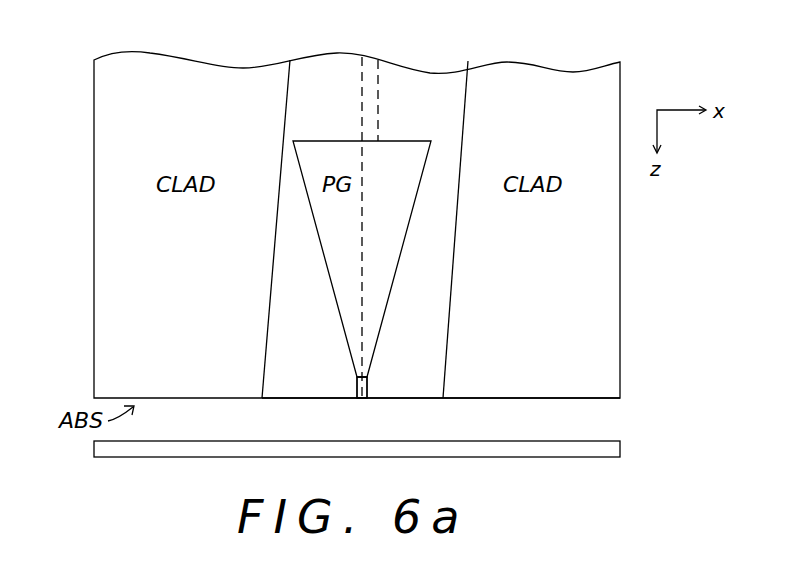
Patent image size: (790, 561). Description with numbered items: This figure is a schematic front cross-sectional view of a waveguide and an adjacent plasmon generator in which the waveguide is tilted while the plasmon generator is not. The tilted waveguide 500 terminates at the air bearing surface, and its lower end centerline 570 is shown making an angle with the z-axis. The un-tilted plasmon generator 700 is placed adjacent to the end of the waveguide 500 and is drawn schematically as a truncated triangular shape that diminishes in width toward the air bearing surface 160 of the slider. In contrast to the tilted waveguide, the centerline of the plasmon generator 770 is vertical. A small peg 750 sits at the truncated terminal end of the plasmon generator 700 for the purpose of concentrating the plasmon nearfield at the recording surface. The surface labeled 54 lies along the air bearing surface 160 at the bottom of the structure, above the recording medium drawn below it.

The waveguide 500 is at (316, 77).
The lower end centerline 570 is at (373, 80).
The plasmon generator 700 is at (405, 155).
The centerline of the plasmon generator 770 is at (362, 228).
The peg 750 is at (359, 398).
The air bearing surface 54 is at (403, 398).
The ABS 160 is at (583, 398).